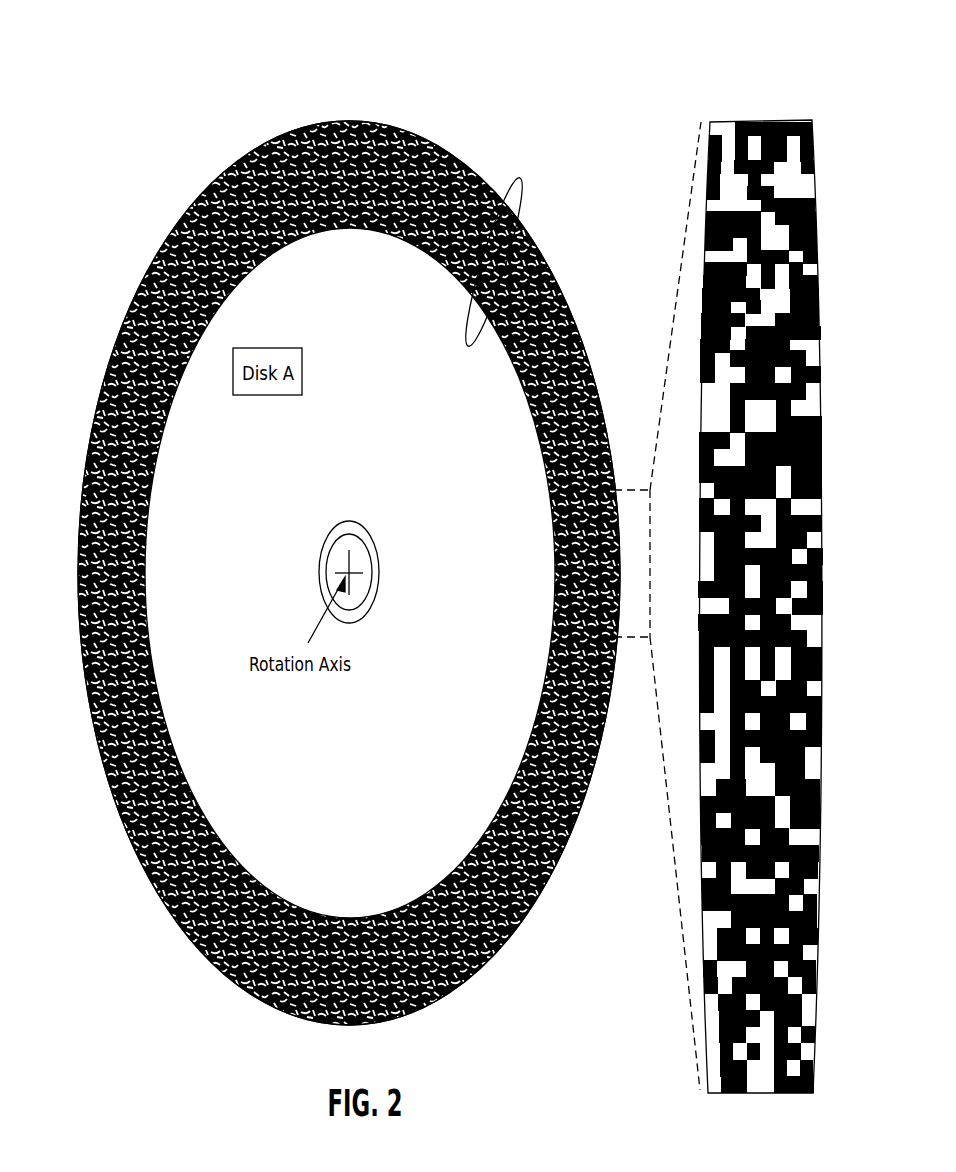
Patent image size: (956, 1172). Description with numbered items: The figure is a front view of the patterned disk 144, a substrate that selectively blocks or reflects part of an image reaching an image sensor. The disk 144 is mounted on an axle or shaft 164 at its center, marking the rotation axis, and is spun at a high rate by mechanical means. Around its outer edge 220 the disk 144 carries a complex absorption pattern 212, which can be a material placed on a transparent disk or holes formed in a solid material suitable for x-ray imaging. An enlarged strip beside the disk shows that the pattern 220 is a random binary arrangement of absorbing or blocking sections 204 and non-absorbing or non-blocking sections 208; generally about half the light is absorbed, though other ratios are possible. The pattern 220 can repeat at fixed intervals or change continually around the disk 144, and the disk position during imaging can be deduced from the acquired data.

The absorption pattern 212 is at (175, 148).
The disk 144 is at (92, 703).
The outer edge 220 is at (521, 177).
The shaft 164 is at (361, 556).
The absorbing section 204 is at (738, 121).
The non-absorbing section 208 is at (773, 128).